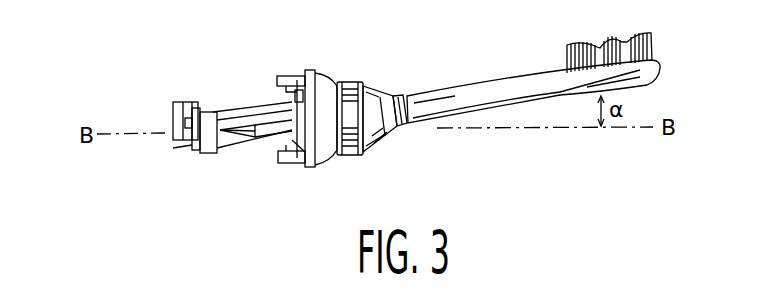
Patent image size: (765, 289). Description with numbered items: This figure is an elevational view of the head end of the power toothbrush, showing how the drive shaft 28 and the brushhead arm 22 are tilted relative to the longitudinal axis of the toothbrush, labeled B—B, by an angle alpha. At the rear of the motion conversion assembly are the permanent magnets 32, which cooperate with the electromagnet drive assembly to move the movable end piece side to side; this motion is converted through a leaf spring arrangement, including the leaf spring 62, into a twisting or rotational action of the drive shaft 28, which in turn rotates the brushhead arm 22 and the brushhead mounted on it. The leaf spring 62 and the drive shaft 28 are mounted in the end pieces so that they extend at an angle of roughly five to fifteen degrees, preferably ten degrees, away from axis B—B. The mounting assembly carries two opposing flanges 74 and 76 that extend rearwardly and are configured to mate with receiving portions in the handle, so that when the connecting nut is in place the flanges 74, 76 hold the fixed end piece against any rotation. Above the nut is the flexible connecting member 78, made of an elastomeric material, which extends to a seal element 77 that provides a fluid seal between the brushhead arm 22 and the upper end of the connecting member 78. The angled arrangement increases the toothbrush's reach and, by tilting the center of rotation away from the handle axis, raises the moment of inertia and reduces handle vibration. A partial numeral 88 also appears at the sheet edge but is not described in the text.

The brushhead arm 22 is at (494, 99).
The drive shaft 28 is at (242, 138).
The permanent magnets 32 is at (171, 110).
The leaf spring 62 is at (240, 121).
The flange 74 is at (288, 73).
The flange 76 is at (298, 163).
The seal element 77 is at (405, 125).
The flexible connecting member 78 is at (386, 98).
The reference numeral (partial) 88 is at (714, 283).